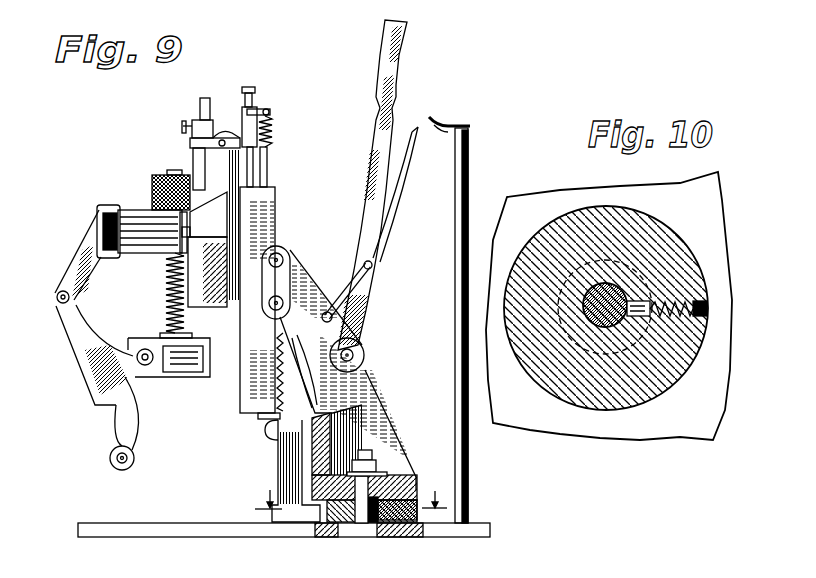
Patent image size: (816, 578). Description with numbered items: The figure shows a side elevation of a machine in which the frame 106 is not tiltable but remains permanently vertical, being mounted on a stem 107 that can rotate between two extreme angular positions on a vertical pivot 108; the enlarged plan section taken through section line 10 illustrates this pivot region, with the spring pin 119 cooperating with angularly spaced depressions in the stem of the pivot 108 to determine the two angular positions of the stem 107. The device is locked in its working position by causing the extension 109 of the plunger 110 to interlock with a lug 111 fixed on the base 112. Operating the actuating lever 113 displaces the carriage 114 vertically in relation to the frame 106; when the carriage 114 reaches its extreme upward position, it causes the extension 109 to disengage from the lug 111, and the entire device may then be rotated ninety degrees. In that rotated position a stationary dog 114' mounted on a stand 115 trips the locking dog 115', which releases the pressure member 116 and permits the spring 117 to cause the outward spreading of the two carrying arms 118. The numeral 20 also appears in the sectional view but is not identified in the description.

In FIG. 9, the section line 10— 10 is at (348, 490).
In FIG. 10, the disk 20 is at (605, 330).
In FIG. 9, the frame 106 is at (247, 380).
In FIG. 9, the stem 107 is at (365, 378).
In FIG. 9, the vertical pivot 108 is at (363, 450).
In FIG. 10, the vertical pivot 108 is at (592, 327).
In FIG. 9, the extension 109 is at (263, 427).
In FIG. 9, the plunger 110 is at (271, 112).
In FIG. 9, the lug 111 is at (273, 432).
In FIG. 9, the base 112 is at (264, 530).
In FIG. 9, the actuating lever 113 is at (372, 292).
In FIG. 9, the carriage 114 is at (255, 202).
In FIG. 9, the stationary dog 114' is at (450, 108).
In FIG. 9, the stand 115 is at (488, 325).
In FIG. 9, the locking dog 115' is at (303, 132).
In FIG. 9, the pressure member 116 is at (197, 343).
In FIG. 9, the spring 117 is at (165, 297).
In FIG. 9, the carrying arms 118 is at (90, 353).
In FIG. 10, the spring pin 119 is at (637, 297).